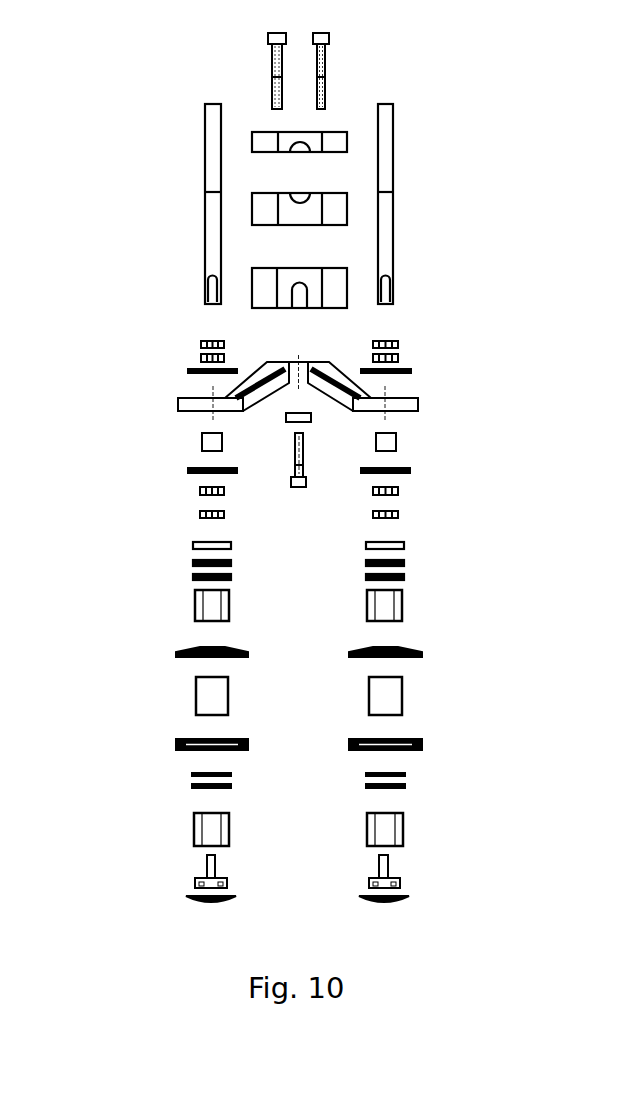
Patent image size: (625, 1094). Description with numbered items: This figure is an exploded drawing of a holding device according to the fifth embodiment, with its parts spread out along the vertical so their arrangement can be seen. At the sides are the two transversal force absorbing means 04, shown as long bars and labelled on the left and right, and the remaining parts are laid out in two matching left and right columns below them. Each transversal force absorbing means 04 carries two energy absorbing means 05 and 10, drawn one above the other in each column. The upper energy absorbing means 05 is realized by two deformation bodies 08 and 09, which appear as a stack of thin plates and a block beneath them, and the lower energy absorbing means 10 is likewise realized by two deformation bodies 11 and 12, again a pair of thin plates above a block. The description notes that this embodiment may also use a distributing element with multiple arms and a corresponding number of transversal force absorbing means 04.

The transversal force absorbing means 04 is at (200, 105).
The energy absorbing means 05 is at (299, 580).
The deformation body 08 is at (365, 603).
The deformation body 09 is at (363, 560).
The energy absorbing means 10 is at (301, 806).
The deformation body 11 is at (363, 782).
The deformation body 12 is at (365, 825).